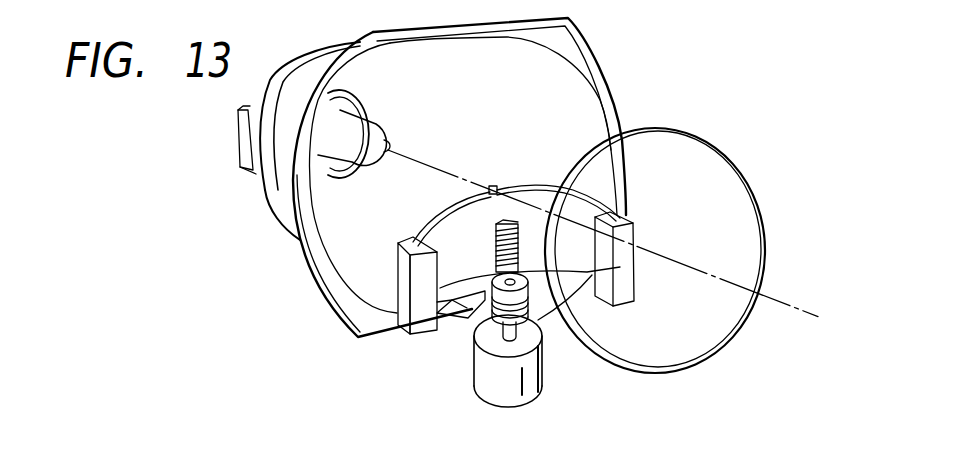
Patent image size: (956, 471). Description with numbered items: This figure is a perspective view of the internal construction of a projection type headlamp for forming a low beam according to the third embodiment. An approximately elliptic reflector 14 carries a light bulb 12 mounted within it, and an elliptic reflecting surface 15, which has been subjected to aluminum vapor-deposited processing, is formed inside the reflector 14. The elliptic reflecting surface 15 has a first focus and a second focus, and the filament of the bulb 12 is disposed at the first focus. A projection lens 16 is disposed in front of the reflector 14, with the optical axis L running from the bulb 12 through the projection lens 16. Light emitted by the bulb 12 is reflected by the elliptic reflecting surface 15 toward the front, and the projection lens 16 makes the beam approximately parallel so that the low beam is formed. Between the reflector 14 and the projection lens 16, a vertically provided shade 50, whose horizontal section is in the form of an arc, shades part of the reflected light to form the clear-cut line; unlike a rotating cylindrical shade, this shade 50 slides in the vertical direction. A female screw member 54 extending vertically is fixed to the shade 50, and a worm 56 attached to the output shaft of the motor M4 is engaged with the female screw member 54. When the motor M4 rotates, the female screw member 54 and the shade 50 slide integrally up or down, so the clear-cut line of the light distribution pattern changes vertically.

The light bulb 12 is at (347, 123).
The reflector 14 is at (307, 82).
The elliptic reflecting surface 15 is at (532, 73).
The projection lens 16 is at (699, 168).
The shade 50 is at (434, 205).
The female screw member 54 is at (495, 245).
The worm 56 is at (463, 316).
The motor M4 is at (530, 383).
The optical axis L is at (784, 300).